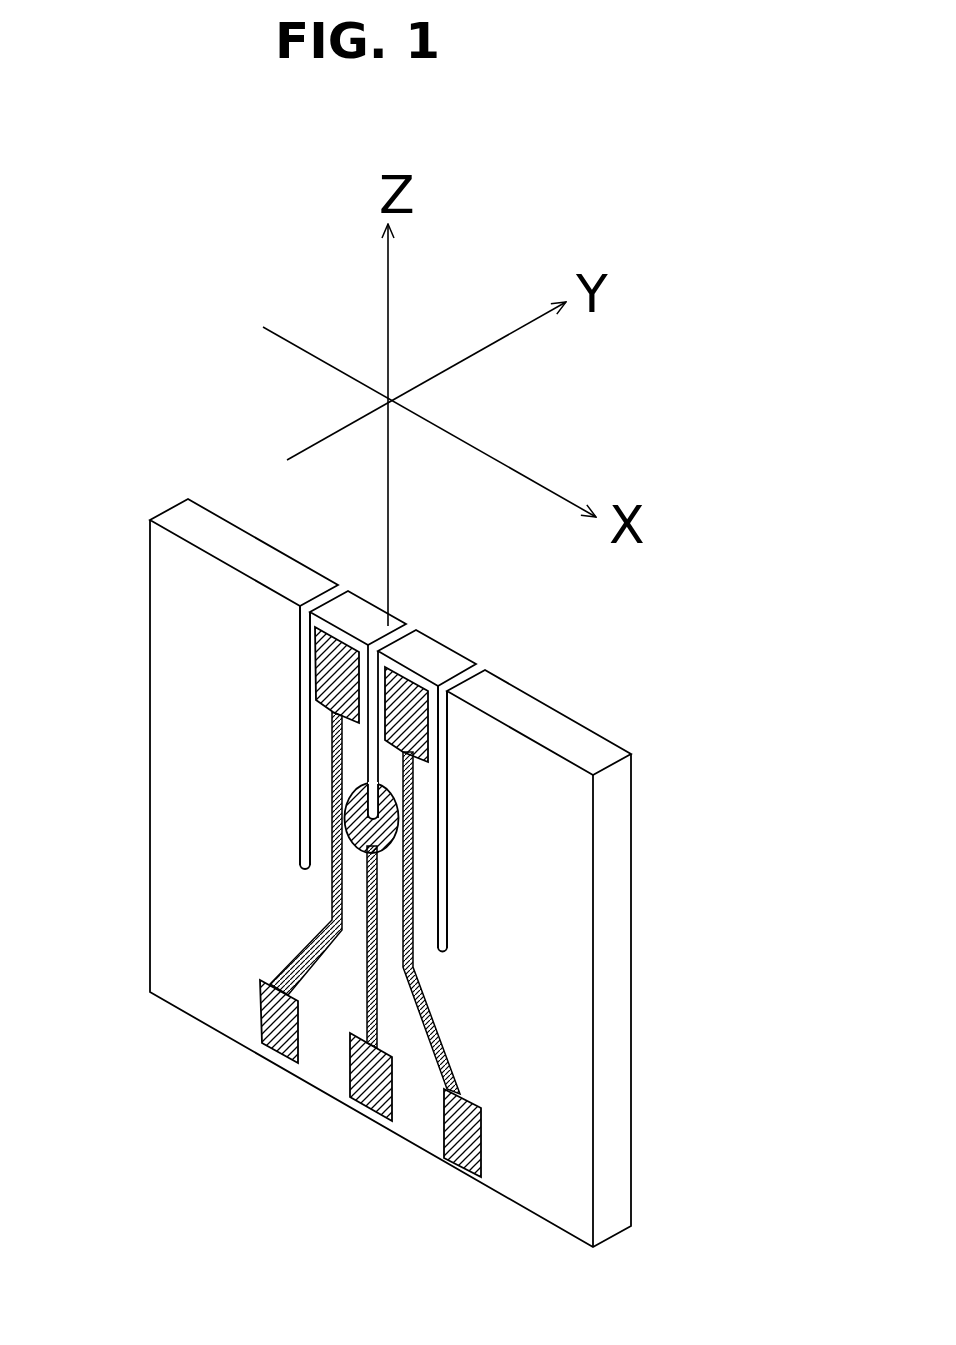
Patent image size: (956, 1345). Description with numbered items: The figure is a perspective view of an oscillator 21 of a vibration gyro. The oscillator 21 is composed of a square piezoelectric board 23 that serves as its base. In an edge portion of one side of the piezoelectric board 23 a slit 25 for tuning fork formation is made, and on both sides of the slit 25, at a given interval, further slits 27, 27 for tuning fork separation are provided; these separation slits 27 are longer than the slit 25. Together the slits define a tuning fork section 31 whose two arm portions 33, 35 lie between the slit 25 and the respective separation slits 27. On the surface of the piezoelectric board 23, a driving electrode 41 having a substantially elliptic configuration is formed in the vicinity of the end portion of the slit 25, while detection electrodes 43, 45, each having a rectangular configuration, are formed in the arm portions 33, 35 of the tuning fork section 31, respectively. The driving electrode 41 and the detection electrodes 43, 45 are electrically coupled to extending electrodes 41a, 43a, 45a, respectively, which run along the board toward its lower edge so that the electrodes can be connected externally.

The oscillator 21 is at (162, 442).
The piezoelectric board 23 is at (165, 592).
The slit for tuning fork formation 25 is at (413, 625).
The slits for tuning fork separation 27 is at (604, 681).
The tuning fork section 31 is at (318, 767).
The arm portion 33 is at (371, 620).
The arm portion 35 is at (408, 650).
The driving electrode 41 is at (381, 848).
The detection electrode 43 is at (340, 676).
The detection electrode 45 is at (398, 700).
The extending electrode 41a is at (370, 1093).
The extending electrode 43a is at (274, 1060).
The extending electrode 45a is at (455, 1169).